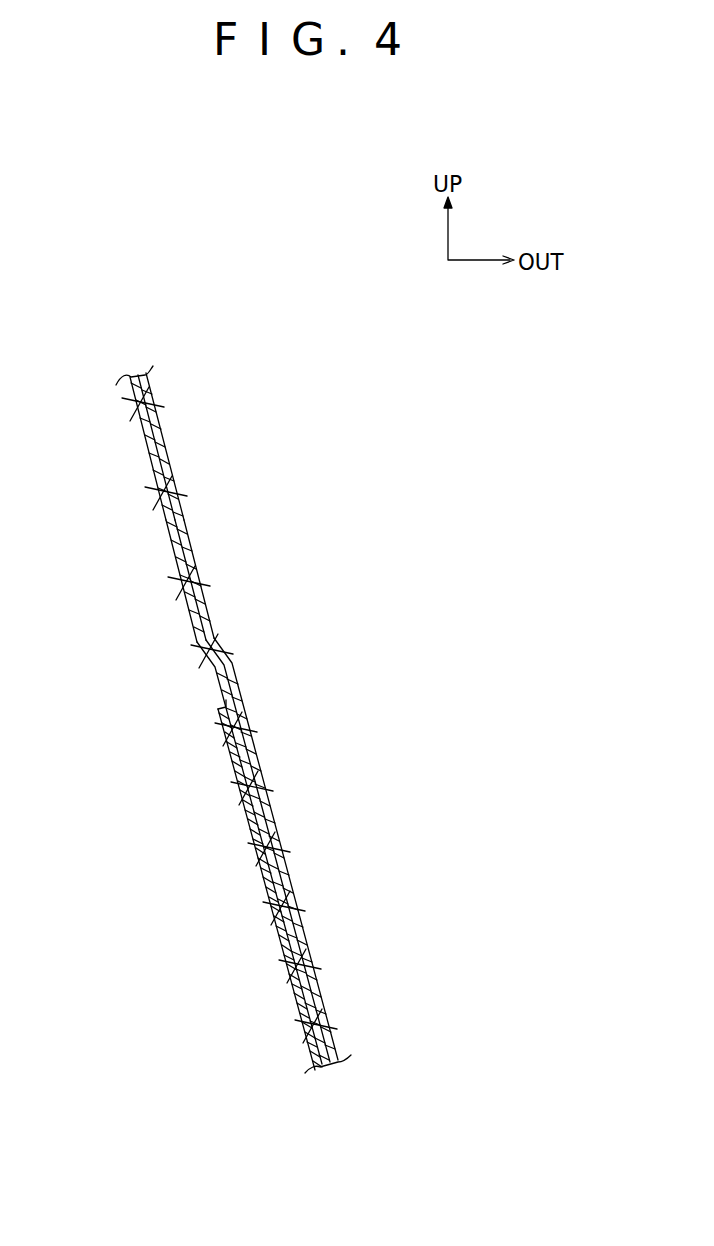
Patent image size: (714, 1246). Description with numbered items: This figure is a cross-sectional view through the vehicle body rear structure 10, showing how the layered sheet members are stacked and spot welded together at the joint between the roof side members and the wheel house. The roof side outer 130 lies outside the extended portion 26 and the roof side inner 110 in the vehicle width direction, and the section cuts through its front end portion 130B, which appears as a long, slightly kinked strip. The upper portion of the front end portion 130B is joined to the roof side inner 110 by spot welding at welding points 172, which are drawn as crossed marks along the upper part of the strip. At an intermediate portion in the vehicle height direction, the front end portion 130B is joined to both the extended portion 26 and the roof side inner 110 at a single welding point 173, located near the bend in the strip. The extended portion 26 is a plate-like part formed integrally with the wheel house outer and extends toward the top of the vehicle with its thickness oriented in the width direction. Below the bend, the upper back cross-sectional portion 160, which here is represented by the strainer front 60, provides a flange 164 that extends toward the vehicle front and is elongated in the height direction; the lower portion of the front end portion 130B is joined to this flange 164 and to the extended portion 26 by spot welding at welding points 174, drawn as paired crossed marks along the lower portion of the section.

The vehicle body rear structure 10 is at (133, 303).
The roof side inner 110 is at (144, 465).
The roof side outer 130 is at (164, 437).
The front end portion 130B is at (188, 534).
The welding points 172 is at (150, 404).
The welding point 173 is at (217, 652).
The welding points 174 is at (268, 790).
The extended portion 26 is at (219, 688).
The strainer front 60 is at (248, 810).
The upper back cross-sectional portion 160 is at (270, 890).
The flange 164 is at (263, 876).